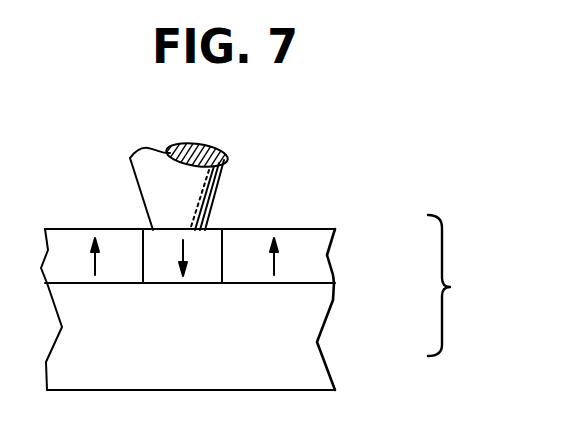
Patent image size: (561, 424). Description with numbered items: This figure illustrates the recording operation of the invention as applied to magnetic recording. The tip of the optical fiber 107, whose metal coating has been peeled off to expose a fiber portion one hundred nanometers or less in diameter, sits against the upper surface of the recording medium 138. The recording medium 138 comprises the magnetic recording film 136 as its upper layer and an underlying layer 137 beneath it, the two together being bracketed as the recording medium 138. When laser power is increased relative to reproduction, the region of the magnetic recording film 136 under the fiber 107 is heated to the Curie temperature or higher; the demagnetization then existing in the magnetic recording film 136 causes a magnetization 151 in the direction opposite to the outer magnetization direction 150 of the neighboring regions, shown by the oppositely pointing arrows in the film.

The optical fiber 107 is at (218, 178).
The magnetic recording film 136 is at (320, 250).
The substrate 137 is at (312, 313).
The recording medium 138 is at (278, 281).
The outer magnetization direction 150 is at (277, 264).
The magnetization 151 is at (182, 261).